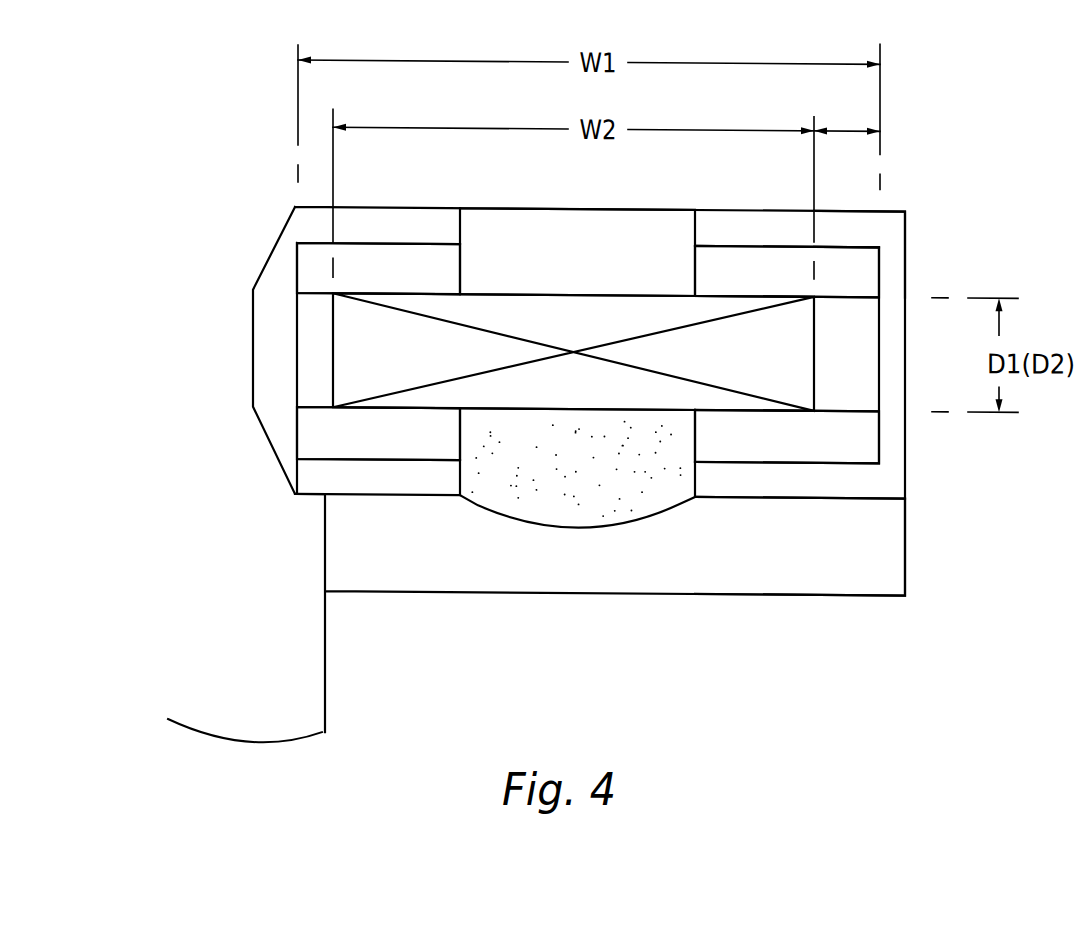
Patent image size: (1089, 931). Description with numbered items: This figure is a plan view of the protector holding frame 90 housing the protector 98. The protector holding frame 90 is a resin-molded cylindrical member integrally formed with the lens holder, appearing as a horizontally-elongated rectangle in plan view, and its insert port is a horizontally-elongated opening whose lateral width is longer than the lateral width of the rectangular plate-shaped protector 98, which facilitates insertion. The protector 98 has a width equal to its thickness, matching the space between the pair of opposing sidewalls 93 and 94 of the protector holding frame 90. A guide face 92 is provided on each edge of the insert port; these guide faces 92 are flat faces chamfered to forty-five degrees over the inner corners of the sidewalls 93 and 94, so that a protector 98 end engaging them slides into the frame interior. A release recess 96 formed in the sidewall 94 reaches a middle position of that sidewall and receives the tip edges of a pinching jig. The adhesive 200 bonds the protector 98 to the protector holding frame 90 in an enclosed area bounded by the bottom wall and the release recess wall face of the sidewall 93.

The protector holding frame 90 is at (917, 474).
The guide face 92 is at (380, 250).
The sidewall 93 is at (845, 462).
The sidewall 94 is at (838, 247).
The release recess 96 is at (638, 230).
The protector 98 is at (424, 313).
The adhesive 200 is at (657, 509).